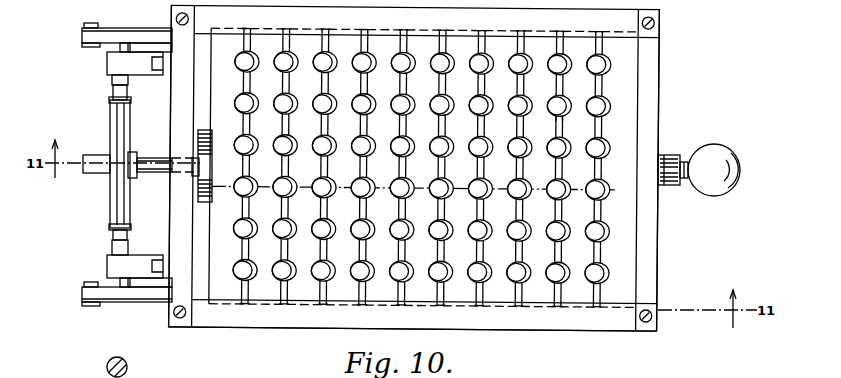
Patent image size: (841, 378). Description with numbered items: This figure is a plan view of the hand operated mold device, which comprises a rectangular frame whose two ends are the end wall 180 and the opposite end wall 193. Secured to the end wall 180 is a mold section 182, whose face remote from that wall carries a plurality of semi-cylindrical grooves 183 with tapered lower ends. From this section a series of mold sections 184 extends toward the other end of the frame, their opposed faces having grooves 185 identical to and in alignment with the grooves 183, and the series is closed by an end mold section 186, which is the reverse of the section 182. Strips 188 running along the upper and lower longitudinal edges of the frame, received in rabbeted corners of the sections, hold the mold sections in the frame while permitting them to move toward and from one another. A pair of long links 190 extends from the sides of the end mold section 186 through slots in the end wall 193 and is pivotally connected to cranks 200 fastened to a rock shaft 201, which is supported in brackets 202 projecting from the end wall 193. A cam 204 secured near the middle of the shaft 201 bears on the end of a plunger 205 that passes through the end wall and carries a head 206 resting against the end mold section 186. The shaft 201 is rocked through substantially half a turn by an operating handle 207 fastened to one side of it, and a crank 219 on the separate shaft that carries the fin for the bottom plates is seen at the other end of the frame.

The end wall 180 is at (660, 247).
The mold section 182 is at (640, 124).
The semi-cylindrical grooves 183 is at (566, 108).
The mold sections 184 is at (420, 41).
The grooves 185 is at (352, 63).
The end mold section 186 is at (409, 167).
The strips 188 is at (600, 329).
The links 190 is at (128, 32).
The end wall 193 is at (183, 224).
The cranks 200 is at (92, 39).
The rock shaft 201 is at (112, 78).
The brackets 202 is at (152, 72).
The cam 204 is at (97, 170).
The plunger 205 is at (157, 148).
The head 206 is at (205, 199).
The operating handle 207 is at (113, 118).
The crank 219 is at (670, 155).